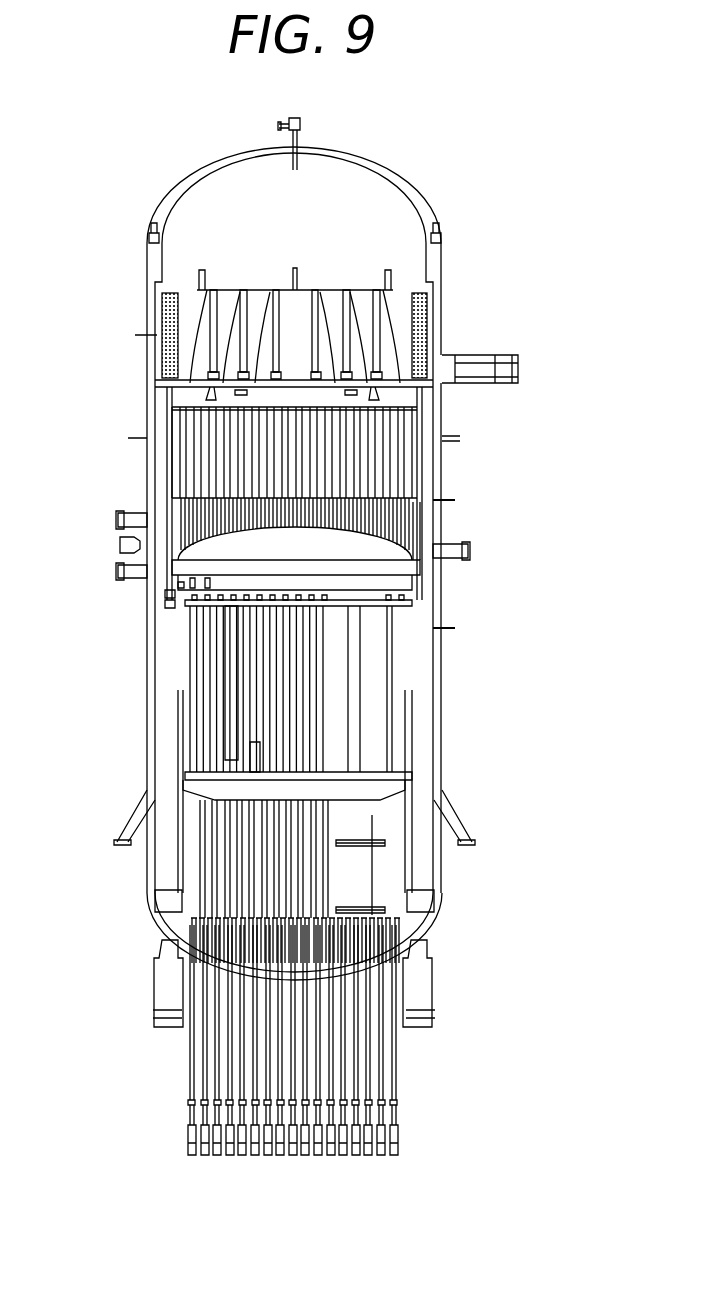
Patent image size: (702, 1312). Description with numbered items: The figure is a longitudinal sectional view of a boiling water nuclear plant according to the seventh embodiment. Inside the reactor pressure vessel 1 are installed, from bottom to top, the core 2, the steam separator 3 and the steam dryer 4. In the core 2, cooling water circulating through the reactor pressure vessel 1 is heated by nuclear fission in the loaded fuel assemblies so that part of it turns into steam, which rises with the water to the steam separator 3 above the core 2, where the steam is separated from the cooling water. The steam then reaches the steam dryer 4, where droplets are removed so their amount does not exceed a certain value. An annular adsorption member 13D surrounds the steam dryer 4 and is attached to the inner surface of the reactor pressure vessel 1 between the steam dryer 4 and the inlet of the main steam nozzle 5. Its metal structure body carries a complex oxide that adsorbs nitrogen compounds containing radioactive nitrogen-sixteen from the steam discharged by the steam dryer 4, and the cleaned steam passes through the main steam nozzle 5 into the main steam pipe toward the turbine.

The reactor pressure vessel 1 is at (386, 175).
The core 2 is at (390, 682).
The steam separator 3 is at (400, 470).
The steam dryer 4 is at (386, 335).
The main steam nozzle 5 is at (490, 352).
The adsorption member 13D is at (418, 302).